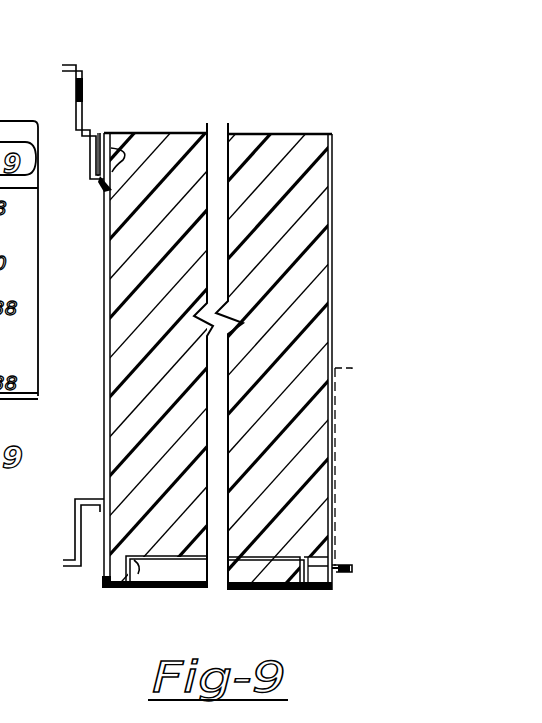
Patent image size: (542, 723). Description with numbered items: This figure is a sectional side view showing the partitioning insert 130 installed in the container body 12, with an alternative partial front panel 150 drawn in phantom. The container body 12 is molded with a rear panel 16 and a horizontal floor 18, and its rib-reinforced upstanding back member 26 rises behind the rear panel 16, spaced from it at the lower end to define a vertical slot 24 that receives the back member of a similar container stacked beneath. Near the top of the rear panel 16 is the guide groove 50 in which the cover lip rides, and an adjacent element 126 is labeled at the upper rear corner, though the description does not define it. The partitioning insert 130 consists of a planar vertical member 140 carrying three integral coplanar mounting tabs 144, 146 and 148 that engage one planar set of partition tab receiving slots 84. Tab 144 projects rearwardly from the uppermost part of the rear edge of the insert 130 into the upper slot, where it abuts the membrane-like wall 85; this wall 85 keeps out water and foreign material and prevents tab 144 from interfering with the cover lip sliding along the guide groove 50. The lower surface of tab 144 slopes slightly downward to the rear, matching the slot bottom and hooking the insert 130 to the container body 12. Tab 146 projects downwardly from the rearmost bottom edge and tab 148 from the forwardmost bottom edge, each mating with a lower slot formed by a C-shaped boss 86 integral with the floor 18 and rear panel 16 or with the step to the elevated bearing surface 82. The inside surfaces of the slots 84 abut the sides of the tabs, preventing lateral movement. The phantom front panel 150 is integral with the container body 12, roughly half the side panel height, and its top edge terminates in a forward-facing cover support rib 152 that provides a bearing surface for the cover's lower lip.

The container body 12 is at (71, 63).
The upstanding back member 26 is at (84, 74).
The guide groove 50 is at (98, 130).
The membrane-like wall 85 is at (113, 135).
The mounting tab 144 is at (130, 132).
The flange 126 is at (77, 140).
The partition tab receiving slots 84 is at (100, 182).
The rear panel 16 is at (105, 331).
The partitioning insert 130 is at (277, 128).
The planar vertical member 140 is at (322, 247).
The cover support rib 152 is at (348, 363).
The partial front panel 150 is at (338, 455).
The vertical slot 24 is at (73, 522).
The elevated bearing surface 82 is at (336, 563).
The mounting tab 146 is at (108, 579).
The C-shaped boss 86 is at (138, 566).
The floor 18 is at (228, 588).
The mounting tab 148 is at (334, 573).